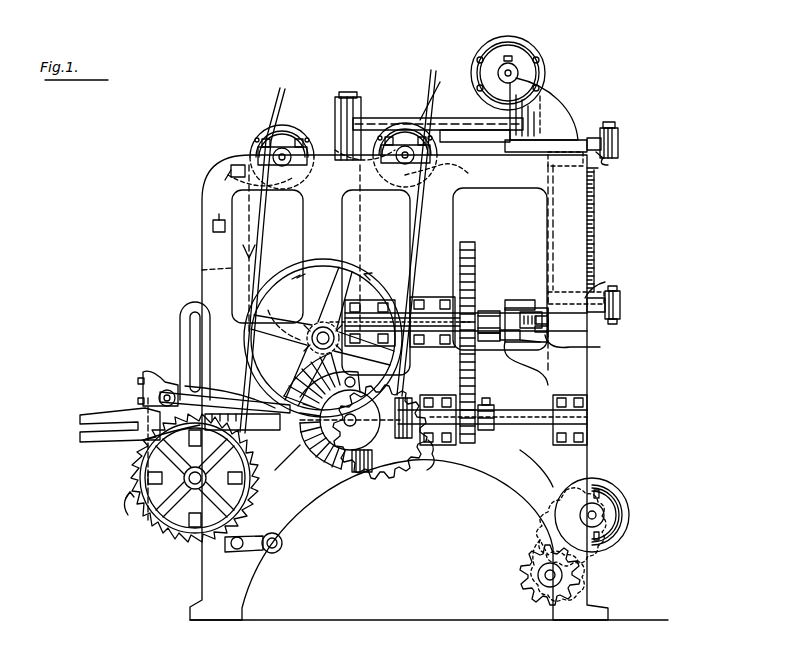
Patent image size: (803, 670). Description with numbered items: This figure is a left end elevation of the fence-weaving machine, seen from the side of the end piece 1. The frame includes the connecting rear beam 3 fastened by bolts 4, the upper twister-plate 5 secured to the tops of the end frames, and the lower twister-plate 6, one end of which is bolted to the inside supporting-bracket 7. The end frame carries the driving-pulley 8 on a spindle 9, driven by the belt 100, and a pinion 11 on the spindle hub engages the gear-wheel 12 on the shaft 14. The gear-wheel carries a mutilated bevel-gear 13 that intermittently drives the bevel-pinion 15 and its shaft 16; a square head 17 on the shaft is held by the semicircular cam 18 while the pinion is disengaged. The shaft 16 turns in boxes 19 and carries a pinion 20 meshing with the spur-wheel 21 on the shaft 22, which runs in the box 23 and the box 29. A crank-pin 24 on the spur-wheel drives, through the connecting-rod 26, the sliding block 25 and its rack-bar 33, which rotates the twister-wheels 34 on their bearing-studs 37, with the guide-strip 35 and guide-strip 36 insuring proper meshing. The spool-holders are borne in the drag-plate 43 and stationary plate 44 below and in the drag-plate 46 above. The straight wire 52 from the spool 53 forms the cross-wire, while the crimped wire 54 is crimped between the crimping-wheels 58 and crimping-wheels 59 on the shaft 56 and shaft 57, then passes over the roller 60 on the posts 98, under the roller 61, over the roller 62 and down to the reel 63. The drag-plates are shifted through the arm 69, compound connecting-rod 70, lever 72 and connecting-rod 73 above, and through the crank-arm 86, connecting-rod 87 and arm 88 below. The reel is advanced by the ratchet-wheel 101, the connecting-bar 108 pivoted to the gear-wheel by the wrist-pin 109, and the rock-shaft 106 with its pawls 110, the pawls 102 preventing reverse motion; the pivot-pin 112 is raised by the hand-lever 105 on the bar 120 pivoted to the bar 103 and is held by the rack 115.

The end piece 1 is at (200, 212).
The connecting rear beam 3 is at (236, 178).
The bolts 4 is at (217, 213).
The upper twister-plate 5 is at (518, 152).
The lower twister-plate 6 is at (512, 340).
The inside supporting-bracket 7 is at (522, 356).
The driving-pulley 8 is at (364, 277).
The spindle 9 is at (322, 325).
The pinion 11 is at (305, 342).
The gear-wheel 12 is at (376, 480).
The mutilated bevel-gear 13 is at (326, 468).
The shaft 14 is at (350, 420).
The bevel-pinion 15 is at (426, 468).
The shaft 16 is at (518, 426).
The square head 17 is at (395, 426).
The semicircular cam 18 is at (358, 502).
The boxes 19 is at (436, 410).
The pinion 20 is at (486, 432).
The spur-wheel 21 is at (476, 280).
The shaft 22 is at (403, 310).
The box 23 is at (432, 300).
The crank-pin 24 is at (484, 312).
The sliding block 25 is at (515, 306).
The connecting-rod 26 is at (490, 341).
The box 29 is at (370, 323).
The rack-bar 33 is at (548, 330).
The twister-wheels 34 is at (548, 320).
The guide-strip 35 is at (530, 312).
The guide-strip 36 is at (528, 338).
The bearing-studs 37 is at (583, 345).
The drag-plate 43 is at (512, 302).
The stationary plate 44 is at (571, 298).
The drag-plate 46 is at (548, 156).
The straight wire 52 is at (597, 200).
The spool 53 is at (598, 172).
The crimped wire 54 is at (378, 172).
The shaft 56 is at (604, 515).
The shaft 57 is at (538, 572).
The crimping-wheels 58 is at (622, 494).
The crimping-wheels 59 is at (522, 582).
The roller 60 is at (518, 40).
The roller 61 is at (396, 122).
The roller 62 is at (296, 132).
The reel 63 is at (162, 530).
The arm 69 is at (618, 146).
The compound connecting-rod 70 is at (614, 161).
The lever 72 is at (602, 128).
The connecting-rod 73 is at (455, 111).
The crank-arm 86 is at (608, 285).
The connecting-rod 87 is at (620, 320).
The arm 88 is at (622, 304).
The brackets or posts 98 is at (555, 112).
The belt 100 is at (277, 110).
The ratchet-wheel 101 is at (132, 480).
The pawls 102 is at (220, 555).
The bar 103 is at (252, 415).
The hand-lever 105 is at (80, 436).
The rock-shaft 106 is at (185, 366).
The connecting-bar 108 is at (225, 400).
The wrist-pin 109 is at (330, 384).
The pawls 110 is at (160, 400).
The pivot-pin 112 is at (145, 443).
The rack 115 is at (146, 380).
The bar 120 is at (279, 457).